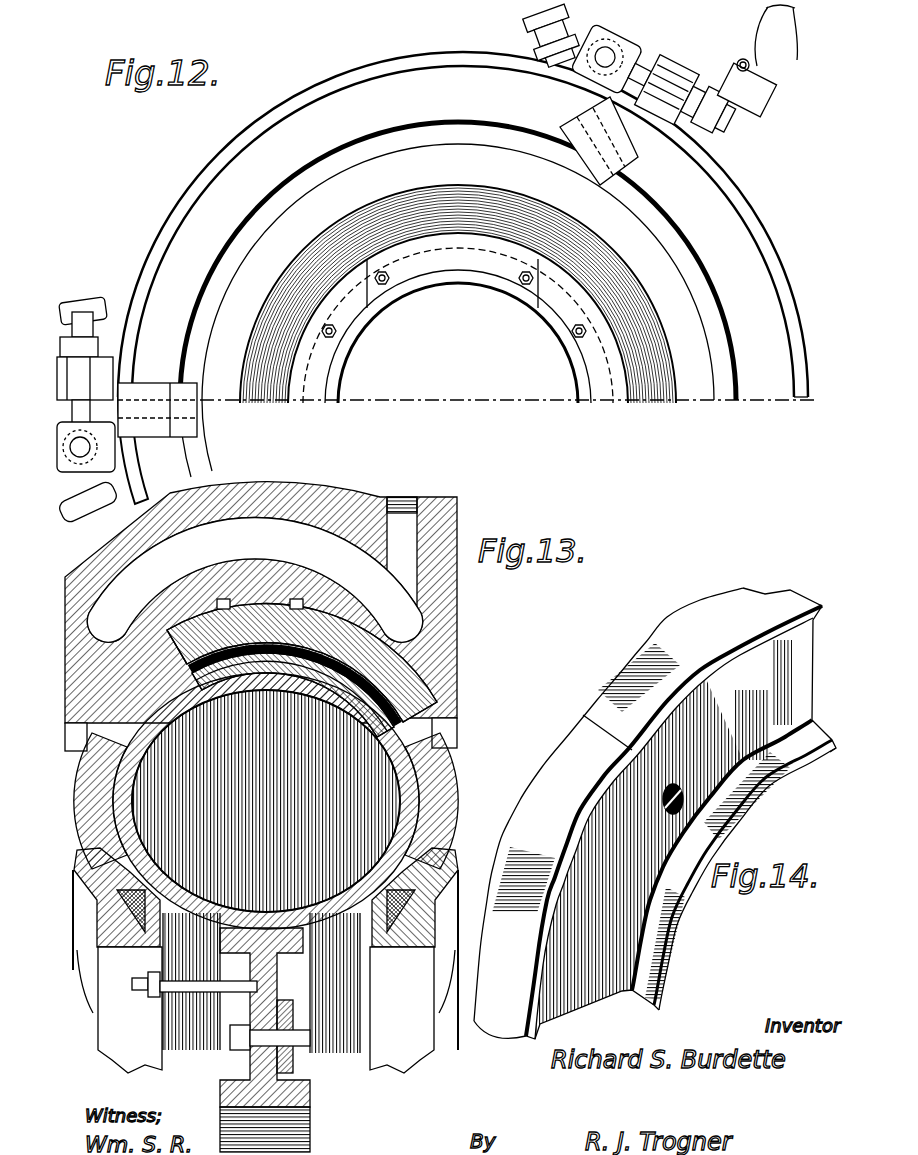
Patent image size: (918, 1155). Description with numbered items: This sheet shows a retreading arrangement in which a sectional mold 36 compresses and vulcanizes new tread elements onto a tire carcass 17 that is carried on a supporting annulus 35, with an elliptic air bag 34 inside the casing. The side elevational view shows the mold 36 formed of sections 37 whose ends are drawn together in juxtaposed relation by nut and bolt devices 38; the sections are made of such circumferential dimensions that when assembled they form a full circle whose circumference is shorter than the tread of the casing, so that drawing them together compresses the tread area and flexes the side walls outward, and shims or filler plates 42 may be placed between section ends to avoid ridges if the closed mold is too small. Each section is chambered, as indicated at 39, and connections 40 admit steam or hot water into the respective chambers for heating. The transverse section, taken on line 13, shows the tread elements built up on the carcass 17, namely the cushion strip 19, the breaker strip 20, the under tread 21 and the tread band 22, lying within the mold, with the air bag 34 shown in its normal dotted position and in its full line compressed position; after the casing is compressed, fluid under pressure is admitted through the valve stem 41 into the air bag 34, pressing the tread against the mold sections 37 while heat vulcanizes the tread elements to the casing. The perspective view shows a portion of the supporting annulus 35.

In FIG. 12, the section line 13 is at (293, 143).
In FIG. 13, the tire carcass 17 is at (455, 826).
In FIG. 13, the cushion strip 19 is at (385, 665).
In FIG. 13, the breaker strip 20 is at (356, 646).
In FIG. 13, the under tread 21 is at (430, 712).
In FIG. 13, the tread band 22 is at (176, 622).
In FIG. 13, the elliptic air bag 34 is at (430, 793).
In FIG. 12, the supporting annulus 35 is at (446, 288).
In FIG. 13, the supporting annulus 35 is at (310, 1092).
In FIG. 14, the supporting annulus 35 is at (738, 805).
In FIG. 13, the mold 36 is at (330, 492).
In FIG. 12, the mold sections 37 is at (326, 86).
In FIG. 12, the nut and bolt devices 38 is at (645, 66).
In FIG. 13, the mold chamber 39 is at (254, 579).
In FIG. 12, the connections 40 is at (577, 40).
In FIG. 13, the valve stem 41 is at (142, 992).
In FIG. 12, the shims or filler plates 42 is at (598, 124).